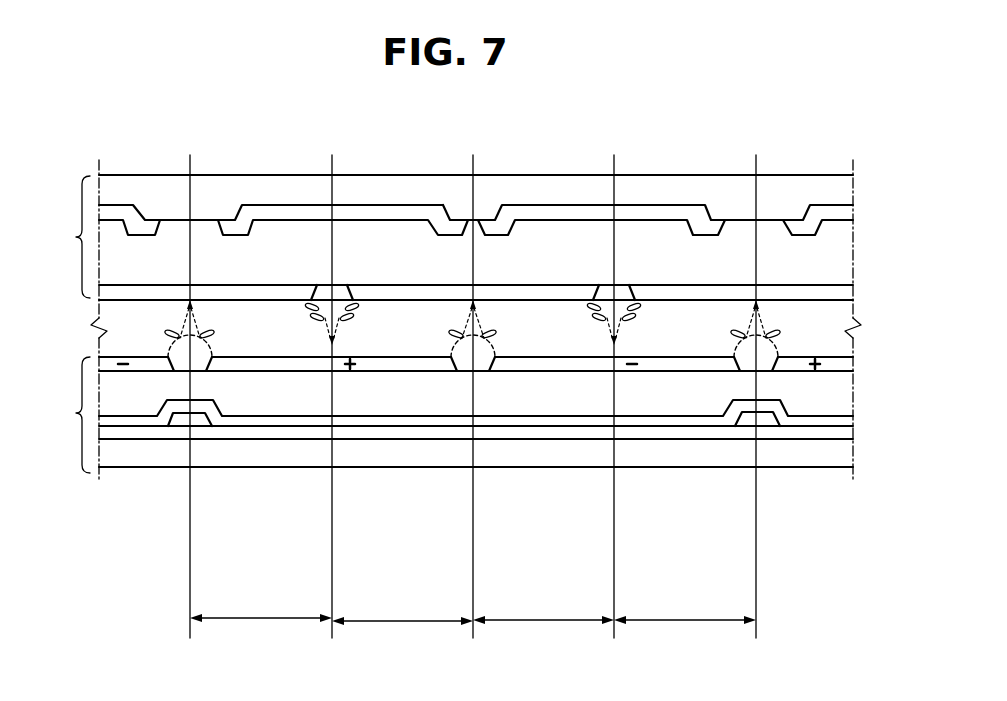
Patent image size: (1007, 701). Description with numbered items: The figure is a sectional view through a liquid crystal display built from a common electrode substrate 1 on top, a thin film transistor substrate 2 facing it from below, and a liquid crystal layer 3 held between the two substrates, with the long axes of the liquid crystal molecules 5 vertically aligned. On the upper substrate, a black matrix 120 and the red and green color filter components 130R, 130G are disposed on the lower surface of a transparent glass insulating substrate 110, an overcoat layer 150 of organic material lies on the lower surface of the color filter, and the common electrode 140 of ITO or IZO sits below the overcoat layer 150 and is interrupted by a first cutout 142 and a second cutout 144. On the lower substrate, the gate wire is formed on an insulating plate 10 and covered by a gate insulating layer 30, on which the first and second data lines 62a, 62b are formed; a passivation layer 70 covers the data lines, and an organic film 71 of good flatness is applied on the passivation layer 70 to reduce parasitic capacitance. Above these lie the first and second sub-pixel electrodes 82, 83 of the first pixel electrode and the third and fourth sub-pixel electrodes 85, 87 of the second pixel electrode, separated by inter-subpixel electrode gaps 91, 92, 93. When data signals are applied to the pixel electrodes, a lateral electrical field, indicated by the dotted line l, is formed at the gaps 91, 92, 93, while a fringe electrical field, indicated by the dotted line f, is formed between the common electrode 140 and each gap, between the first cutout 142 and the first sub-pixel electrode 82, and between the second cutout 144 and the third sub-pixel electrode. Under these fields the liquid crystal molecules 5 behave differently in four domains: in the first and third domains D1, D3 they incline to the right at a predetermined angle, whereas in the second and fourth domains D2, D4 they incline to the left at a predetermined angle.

The common electrode substrate 1 is at (74, 237).
The thin film transistor substrate 2 is at (74, 415).
The liquid crystal layer 3 is at (91, 316).
The liquid crystal molecules 5 is at (312, 319).
The insulating plate 10 is at (774, 453).
The gate insulating layer 30 is at (665, 428).
The first data line 62a is at (198, 421).
The second data line 62b is at (742, 421).
The passivation layer 70 is at (110, 423).
The organic film 71 is at (282, 400).
The first sub-pixel electrode 82 is at (428, 366).
The second sub-pixel electrode 83 is at (828, 368).
The third sub-pixel electrode 85 is at (512, 366).
The fourth sub-pixel electrode 87 is at (140, 366).
The inter-subpixel electrode gap 91 is at (200, 365).
The inter-subpixel electrode gap 92 is at (482, 365).
The inter-subpixel electrode gap 93 is at (766, 365).
The insulating substrate 110 is at (292, 192).
The black matrix 120 is at (210, 203).
The red component of color filter 130R is at (373, 213).
The green component of color filter 130G is at (637, 213).
The common electrode 140 is at (158, 293).
The first cutout 142 is at (340, 287).
The second cutout 144 is at (622, 287).
The overcoat layer 150 is at (568, 232).
The dotted line indicating fringe electrical field f is at (470, 318).
The dotted line indicating lateral electrical field l is at (458, 349).
The first domain D1 is at (261, 607).
The second domain D2 is at (402, 610).
The third domain D3 is at (543, 609).
The fourth domain D4 is at (685, 609).